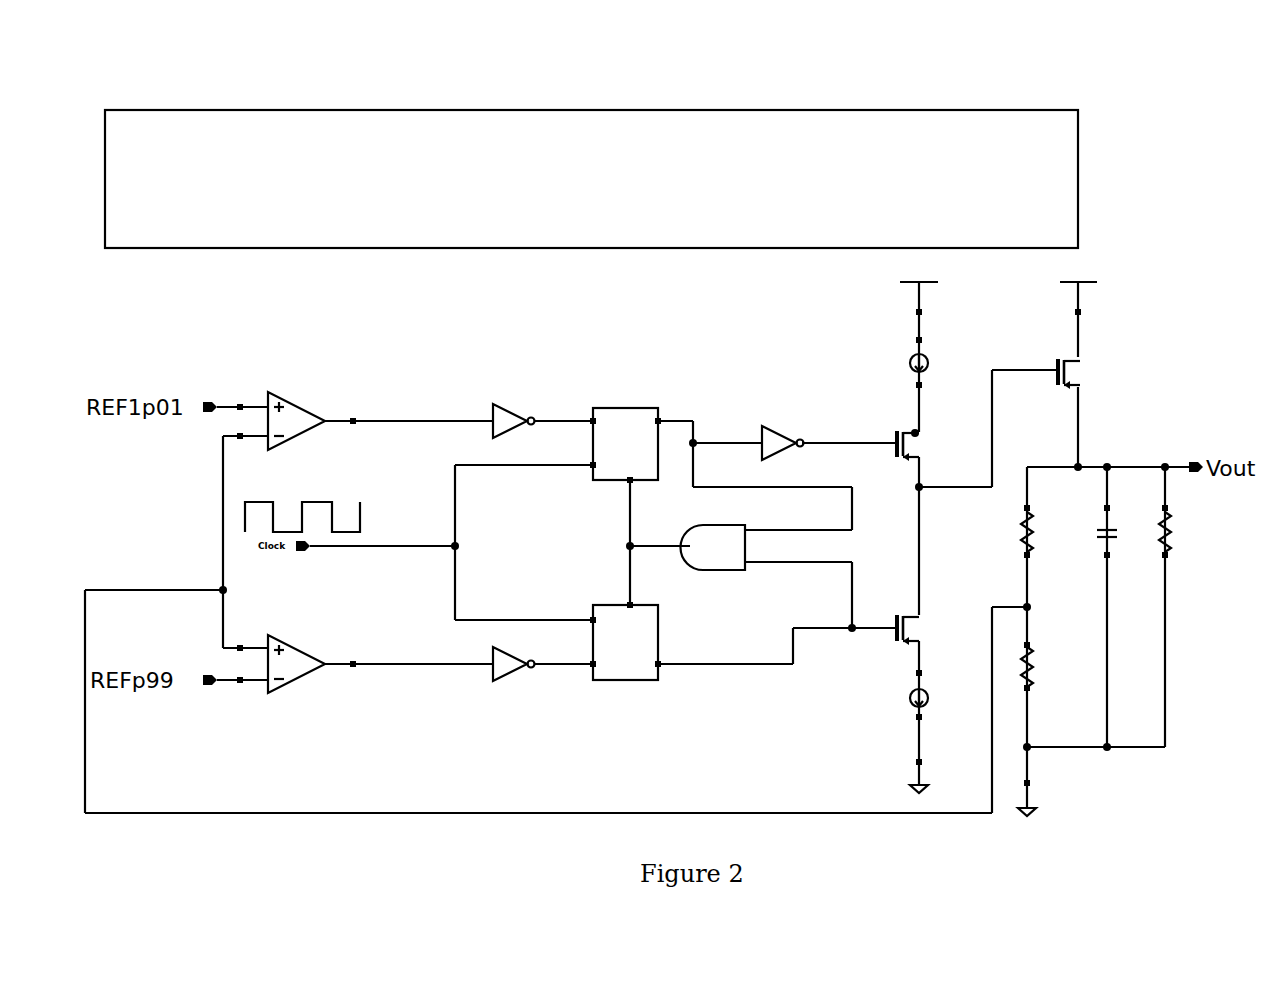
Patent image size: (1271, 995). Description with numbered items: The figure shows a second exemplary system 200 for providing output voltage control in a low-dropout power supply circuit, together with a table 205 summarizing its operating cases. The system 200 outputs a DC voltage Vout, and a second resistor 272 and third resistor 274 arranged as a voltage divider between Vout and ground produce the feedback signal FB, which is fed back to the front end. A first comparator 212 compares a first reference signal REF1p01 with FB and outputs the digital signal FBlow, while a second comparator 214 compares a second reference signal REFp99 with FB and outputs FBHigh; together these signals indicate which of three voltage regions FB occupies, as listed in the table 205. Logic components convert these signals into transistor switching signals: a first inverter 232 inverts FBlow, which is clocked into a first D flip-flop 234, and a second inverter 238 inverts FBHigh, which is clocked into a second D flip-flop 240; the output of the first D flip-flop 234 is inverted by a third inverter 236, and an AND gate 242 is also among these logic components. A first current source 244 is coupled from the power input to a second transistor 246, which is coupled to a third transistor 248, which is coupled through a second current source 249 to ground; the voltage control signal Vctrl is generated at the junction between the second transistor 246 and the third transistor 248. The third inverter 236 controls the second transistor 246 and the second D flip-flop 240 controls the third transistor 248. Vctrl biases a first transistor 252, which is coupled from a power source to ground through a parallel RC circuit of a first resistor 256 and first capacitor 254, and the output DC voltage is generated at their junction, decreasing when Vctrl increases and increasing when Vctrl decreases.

The exemplary system 200 is at (133, 70).
The table 205 is at (383, 108).
The first comparator 212 is at (297, 441).
The second comparator 214 is at (297, 690).
The first inverter 232 is at (483, 428).
The first D flip-flop 234 is at (610, 483).
The third inverter 236 is at (755, 432).
The second inverter 238 is at (487, 688).
The second D flip-flop 240 is at (607, 604).
The AND gate 242 is at (712, 571).
The first current source 244 is at (912, 352).
The second transistor 246 is at (920, 428).
The third transistor 248 is at (920, 613).
The second current source 249 is at (910, 688).
The first transistor 252 is at (1080, 351).
The first capacitor 254 is at (1112, 550).
The first resistor 256 is at (1172, 550).
The second resistor 272 is at (1022, 525).
The third resistor 274 is at (1034, 650).